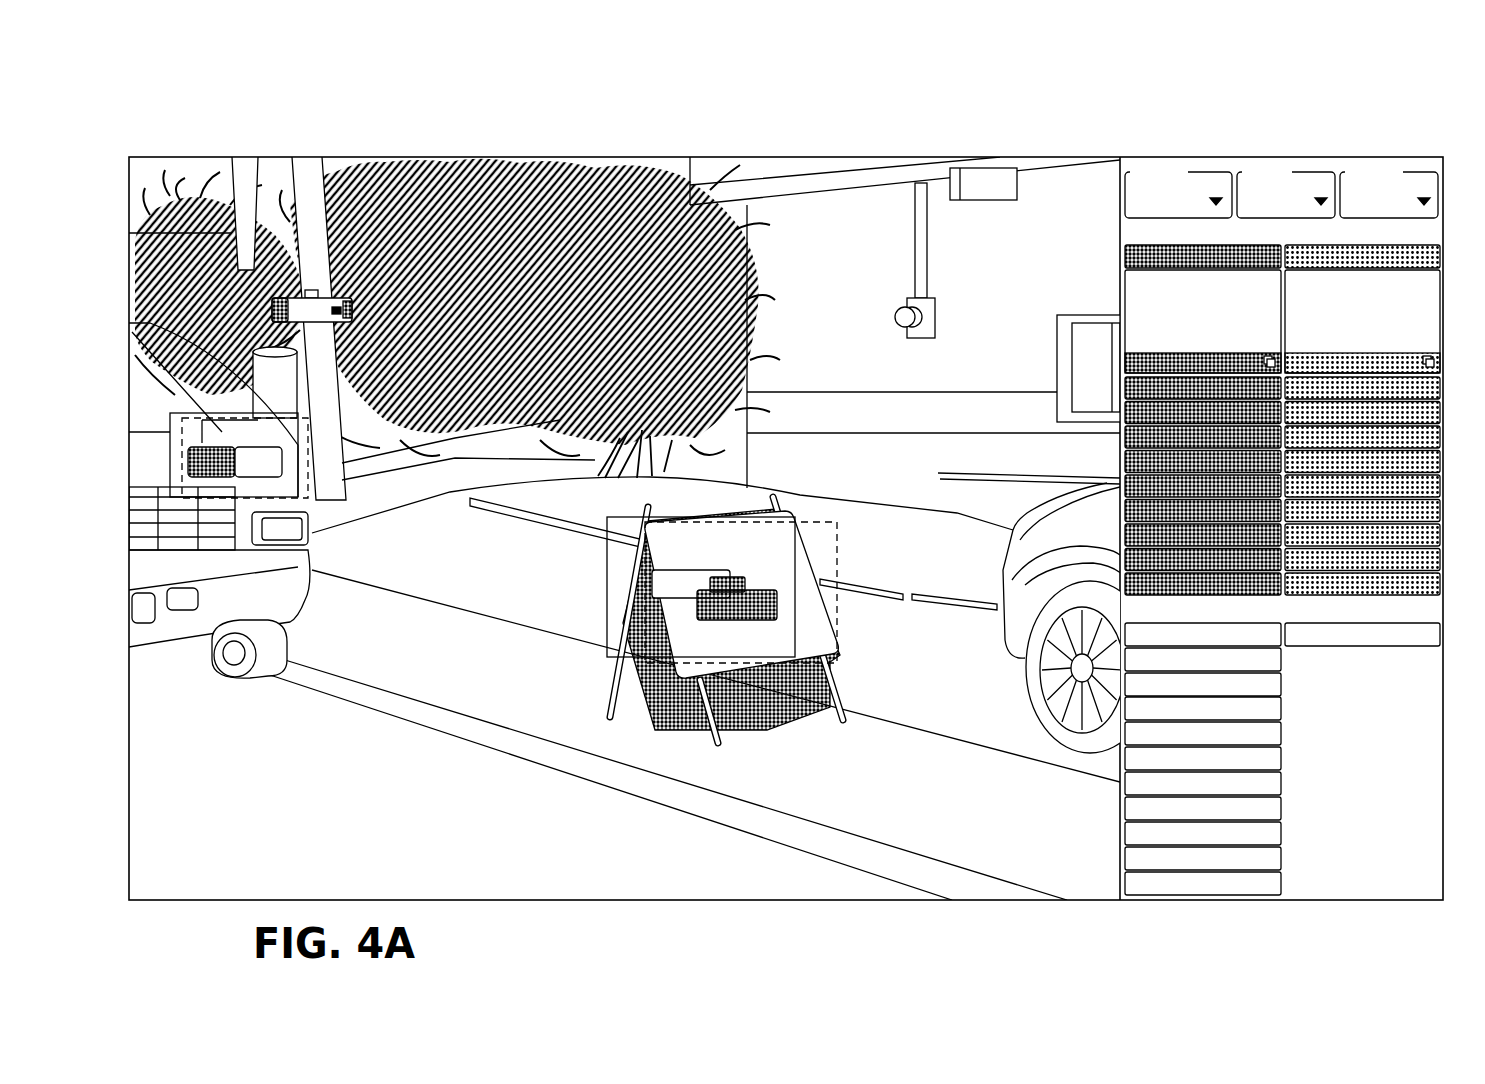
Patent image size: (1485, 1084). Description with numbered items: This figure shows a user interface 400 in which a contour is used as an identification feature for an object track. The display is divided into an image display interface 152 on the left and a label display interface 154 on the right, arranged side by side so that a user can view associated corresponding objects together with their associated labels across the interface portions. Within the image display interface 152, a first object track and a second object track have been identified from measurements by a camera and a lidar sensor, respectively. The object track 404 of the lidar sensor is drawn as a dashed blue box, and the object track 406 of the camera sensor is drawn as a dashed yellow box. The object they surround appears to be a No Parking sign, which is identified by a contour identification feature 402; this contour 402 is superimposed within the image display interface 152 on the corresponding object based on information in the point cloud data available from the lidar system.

The user interface 400 is at (222, 100).
The image display interface 152 is at (127, 133).
The label display interface 154 is at (1443, 133).
The contour identification feature 402 is at (692, 727).
The object track of the lidar sensor 404 is at (846, 652).
The object track of the camera sensor 406 is at (836, 606).